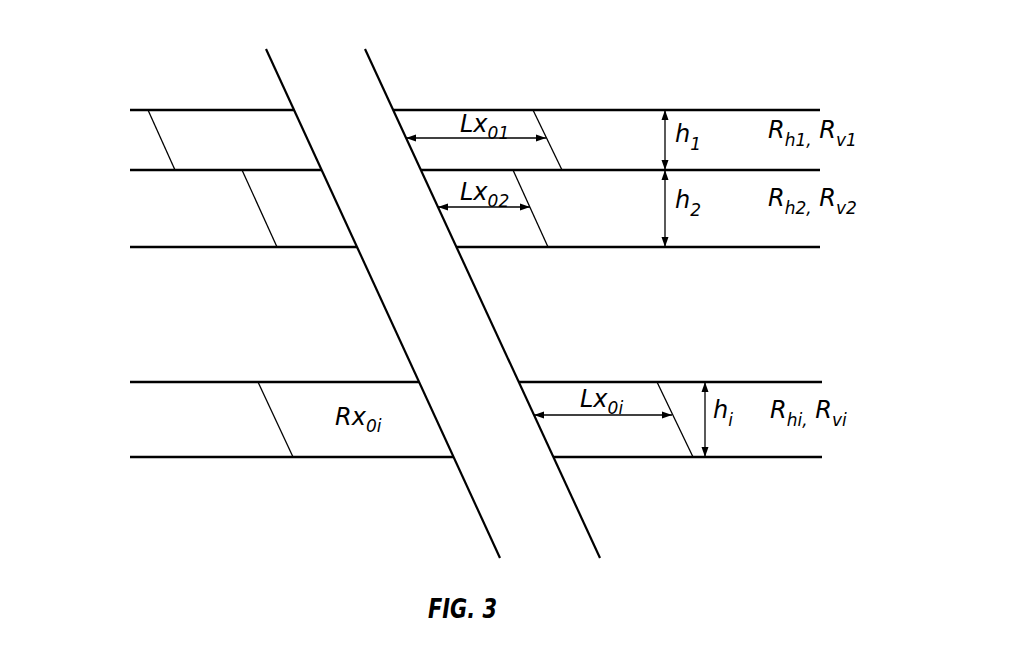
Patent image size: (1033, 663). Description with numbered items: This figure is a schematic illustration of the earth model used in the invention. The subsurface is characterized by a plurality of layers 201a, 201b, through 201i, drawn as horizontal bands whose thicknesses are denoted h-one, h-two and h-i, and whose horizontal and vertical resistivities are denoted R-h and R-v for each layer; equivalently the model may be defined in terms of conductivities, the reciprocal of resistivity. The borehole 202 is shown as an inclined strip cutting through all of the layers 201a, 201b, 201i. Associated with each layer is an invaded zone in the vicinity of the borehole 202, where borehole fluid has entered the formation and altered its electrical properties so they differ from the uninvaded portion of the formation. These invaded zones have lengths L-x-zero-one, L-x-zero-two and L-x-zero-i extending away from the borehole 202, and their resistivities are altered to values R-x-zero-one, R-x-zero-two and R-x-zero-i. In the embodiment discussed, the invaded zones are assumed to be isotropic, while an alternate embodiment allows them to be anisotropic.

The layer 201a is at (128, 138).
The layer 201b is at (128, 207).
The layer 201i is at (132, 421).
The borehole 202 is at (343, 100).